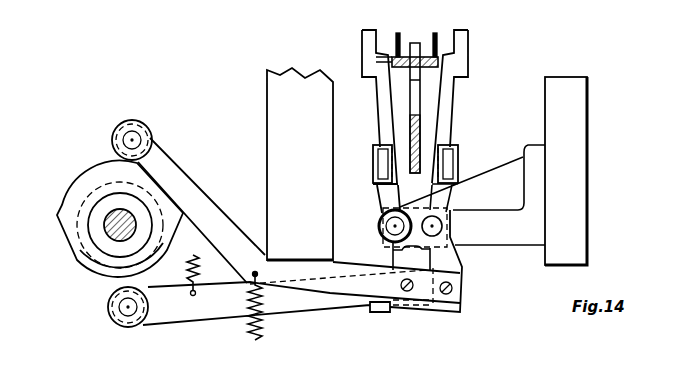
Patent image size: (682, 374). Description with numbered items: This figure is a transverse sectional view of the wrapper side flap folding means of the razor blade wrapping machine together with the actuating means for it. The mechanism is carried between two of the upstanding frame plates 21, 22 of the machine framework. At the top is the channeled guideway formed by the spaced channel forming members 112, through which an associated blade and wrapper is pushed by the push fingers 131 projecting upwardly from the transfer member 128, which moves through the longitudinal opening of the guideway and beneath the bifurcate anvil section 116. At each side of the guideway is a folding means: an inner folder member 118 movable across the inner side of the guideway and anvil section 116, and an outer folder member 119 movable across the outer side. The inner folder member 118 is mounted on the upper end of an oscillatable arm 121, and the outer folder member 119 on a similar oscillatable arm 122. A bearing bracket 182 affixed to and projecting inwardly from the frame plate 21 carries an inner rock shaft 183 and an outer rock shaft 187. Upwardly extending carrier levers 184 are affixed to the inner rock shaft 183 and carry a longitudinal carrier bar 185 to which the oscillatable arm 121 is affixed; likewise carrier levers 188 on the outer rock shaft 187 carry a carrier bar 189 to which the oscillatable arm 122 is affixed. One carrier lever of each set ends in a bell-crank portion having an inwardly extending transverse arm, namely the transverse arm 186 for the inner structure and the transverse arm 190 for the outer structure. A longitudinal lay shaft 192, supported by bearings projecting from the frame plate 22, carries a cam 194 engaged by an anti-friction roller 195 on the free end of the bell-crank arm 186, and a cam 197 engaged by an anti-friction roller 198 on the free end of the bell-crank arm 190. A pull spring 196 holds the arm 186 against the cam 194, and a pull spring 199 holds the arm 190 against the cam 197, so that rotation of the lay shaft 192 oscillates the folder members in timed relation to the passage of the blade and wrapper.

The frame plate 21 is at (582, 133).
The frame plate 22 is at (266, 112).
The channel forming members 112 is at (404, 68).
The anvil section 116 is at (403, 52).
The inner folder member 118 is at (386, 46).
The outer folder member 119 is at (440, 48).
The oscillatable arm 121 is at (380, 108).
The oscillatable arm 122 is at (450, 100).
The transfer member 128 is at (421, 128).
The push fingers 131 is at (420, 45).
The bearing bracket 182 is at (500, 246).
The inner rock shaft 183 is at (386, 227).
The carrier levers 184 is at (382, 199).
The carrier bar 185 is at (375, 162).
The transverse arm 186 is at (312, 305).
The outer rock shaft 187 is at (443, 227).
The carrier levers 188 is at (447, 195).
The carrier bar 189 is at (458, 161).
The transverse arm 190 is at (236, 224).
The lay shaft 192 is at (118, 232).
The cam 194 is at (90, 279).
The anti-friction roller 195 is at (130, 328).
The pull spring 196 is at (213, 279).
The cam 197 is at (72, 195).
The anti-friction roller 198 is at (142, 127).
The pull spring 199 is at (248, 328).